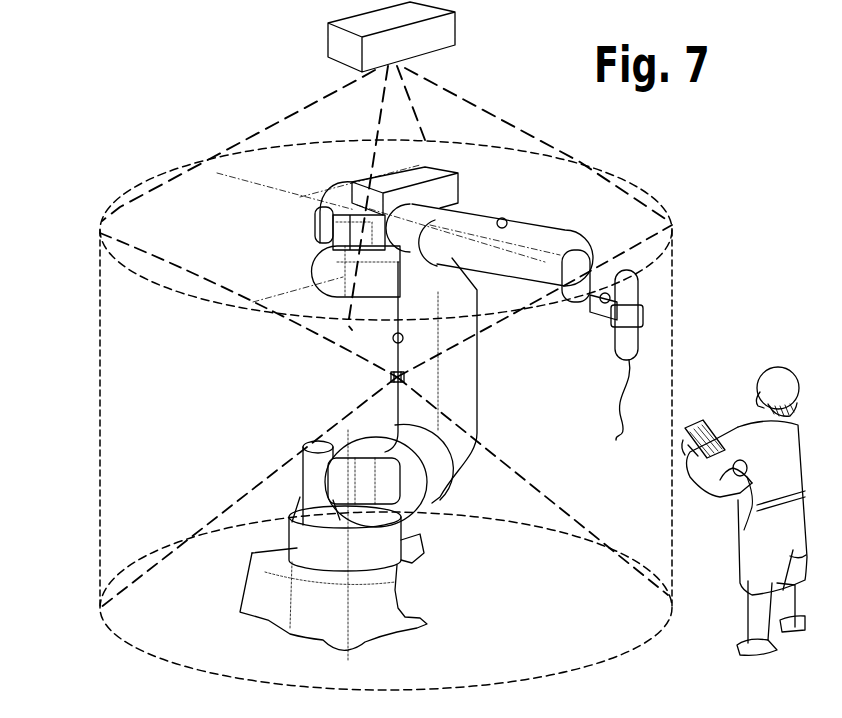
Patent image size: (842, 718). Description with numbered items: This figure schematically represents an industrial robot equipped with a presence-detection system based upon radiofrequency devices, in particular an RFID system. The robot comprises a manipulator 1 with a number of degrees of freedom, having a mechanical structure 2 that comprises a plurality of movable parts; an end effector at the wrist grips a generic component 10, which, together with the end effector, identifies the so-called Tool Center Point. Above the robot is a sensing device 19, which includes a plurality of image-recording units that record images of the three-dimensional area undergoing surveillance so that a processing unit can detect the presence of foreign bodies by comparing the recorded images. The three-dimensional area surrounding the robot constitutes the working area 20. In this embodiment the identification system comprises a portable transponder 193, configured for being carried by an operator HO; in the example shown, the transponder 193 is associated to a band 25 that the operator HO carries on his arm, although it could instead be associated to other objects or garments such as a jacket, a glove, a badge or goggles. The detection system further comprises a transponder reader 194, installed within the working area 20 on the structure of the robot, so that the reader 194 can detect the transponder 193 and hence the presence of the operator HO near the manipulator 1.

The manipulator 1 is at (363, 386).
The mechanical structure 2 is at (474, 373).
The component 10 is at (621, 365).
The sensing device 19 is at (330, 61).
The transponder reader 194 is at (390, 377).
The portable transponder 193 is at (742, 460).
The working area 20 is at (676, 292).
The band 25 is at (752, 507).
The operator HO is at (744, 484).